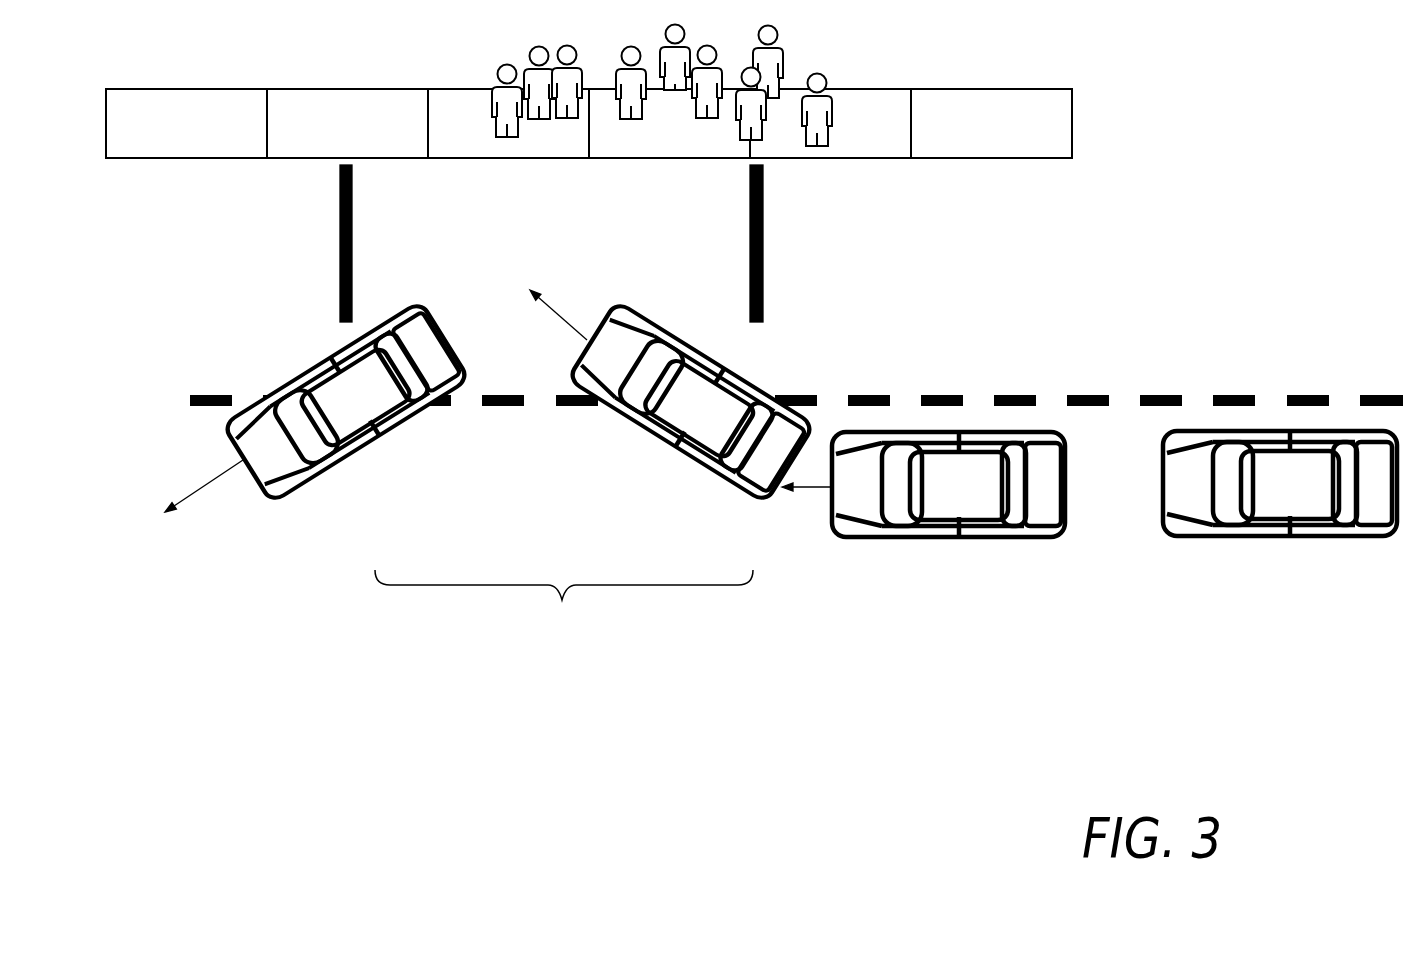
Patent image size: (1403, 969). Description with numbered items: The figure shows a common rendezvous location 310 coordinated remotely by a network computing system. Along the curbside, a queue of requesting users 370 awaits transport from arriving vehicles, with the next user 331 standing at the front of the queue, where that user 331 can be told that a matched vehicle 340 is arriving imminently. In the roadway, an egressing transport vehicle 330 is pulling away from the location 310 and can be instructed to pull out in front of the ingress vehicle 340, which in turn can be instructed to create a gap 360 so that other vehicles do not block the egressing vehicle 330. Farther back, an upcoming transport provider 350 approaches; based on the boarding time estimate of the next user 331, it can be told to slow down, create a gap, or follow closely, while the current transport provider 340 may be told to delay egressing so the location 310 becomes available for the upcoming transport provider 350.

The common rendezvous location 310 is at (502, 239).
The egressing transport vehicle 330 is at (330, 405).
The next user 331 is at (477, 98).
The ingress vehicle 340 is at (686, 419).
The upcoming transport provider 350 is at (1307, 496).
The gap 360 is at (564, 602).
The queue of requesting users 370 is at (704, 31).